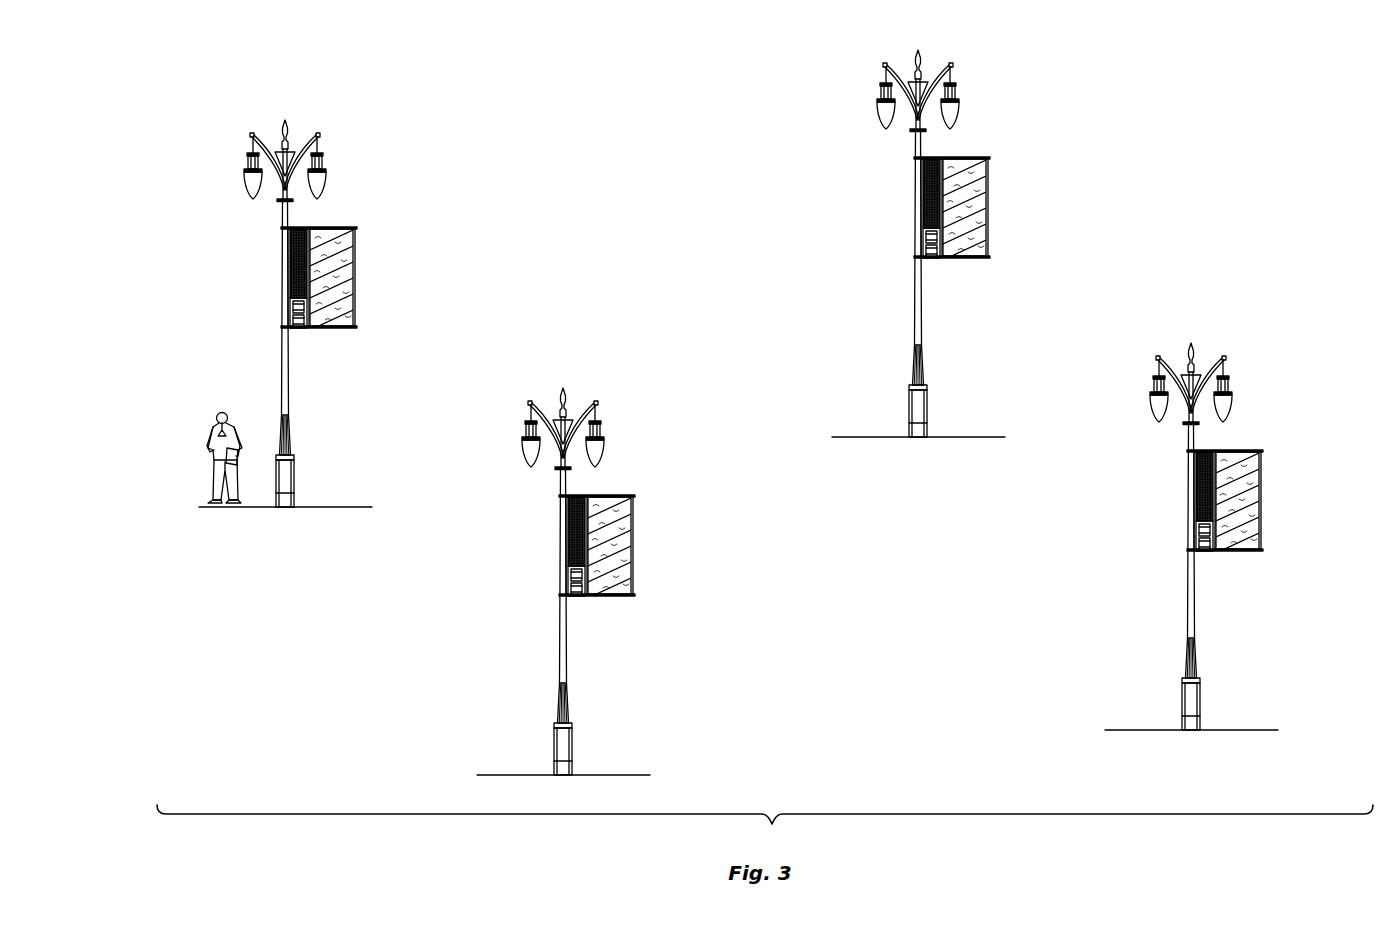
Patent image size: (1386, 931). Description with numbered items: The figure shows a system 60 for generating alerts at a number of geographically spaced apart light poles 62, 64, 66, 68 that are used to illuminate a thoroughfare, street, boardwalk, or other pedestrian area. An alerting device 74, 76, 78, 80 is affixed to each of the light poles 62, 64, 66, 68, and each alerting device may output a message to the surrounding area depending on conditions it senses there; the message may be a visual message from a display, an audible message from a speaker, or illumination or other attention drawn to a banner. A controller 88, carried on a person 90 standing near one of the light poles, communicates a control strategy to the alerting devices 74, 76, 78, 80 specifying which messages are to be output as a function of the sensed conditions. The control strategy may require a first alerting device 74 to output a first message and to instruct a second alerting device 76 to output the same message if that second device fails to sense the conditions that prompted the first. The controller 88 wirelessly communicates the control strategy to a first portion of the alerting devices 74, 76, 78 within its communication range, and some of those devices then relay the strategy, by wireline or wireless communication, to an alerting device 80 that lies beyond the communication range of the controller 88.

The system 60 is at (1229, 99).
The light pole 62 is at (321, 292).
The light pole 64 is at (954, 222).
The light pole 66 is at (599, 560).
The light pole 68 is at (1227, 515).
The alerting device 74 is at (322, 253).
The alerting device 76 is at (955, 183).
The alerting device 78 is at (600, 521).
The alerting device 80 is at (1228, 476).
The controller 88 is at (248, 456).
The person 90 is at (212, 419).